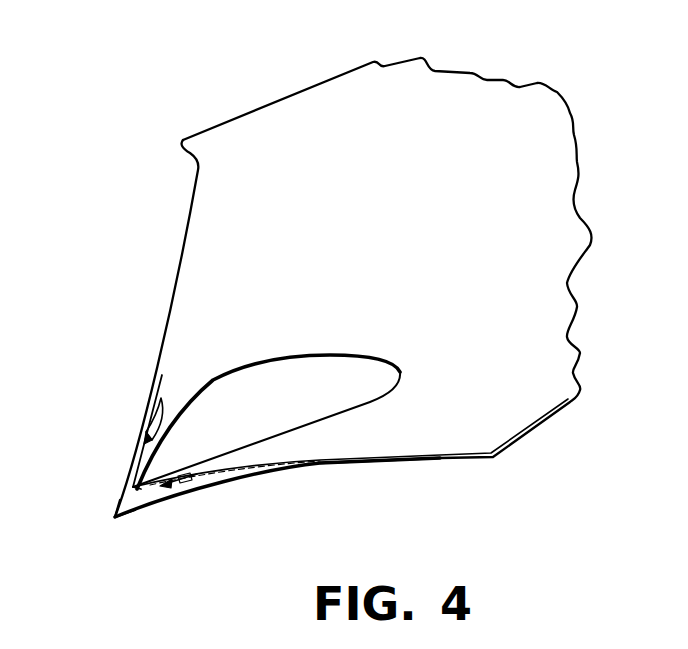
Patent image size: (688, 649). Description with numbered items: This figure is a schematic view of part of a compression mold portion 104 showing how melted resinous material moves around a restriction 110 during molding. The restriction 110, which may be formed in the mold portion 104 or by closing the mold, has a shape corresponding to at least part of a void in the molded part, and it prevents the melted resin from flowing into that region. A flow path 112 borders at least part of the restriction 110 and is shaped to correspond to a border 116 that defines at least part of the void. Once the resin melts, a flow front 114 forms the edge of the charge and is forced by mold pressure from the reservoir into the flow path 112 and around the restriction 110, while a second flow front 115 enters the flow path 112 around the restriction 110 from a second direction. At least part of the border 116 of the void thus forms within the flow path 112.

The mold portion 104 is at (435, 112).
The restriction 110 is at (320, 408).
The flow path 112 is at (113, 508).
The flow front 114 is at (205, 484).
The second flow front 115 is at (160, 413).
The border 116 is at (240, 463).